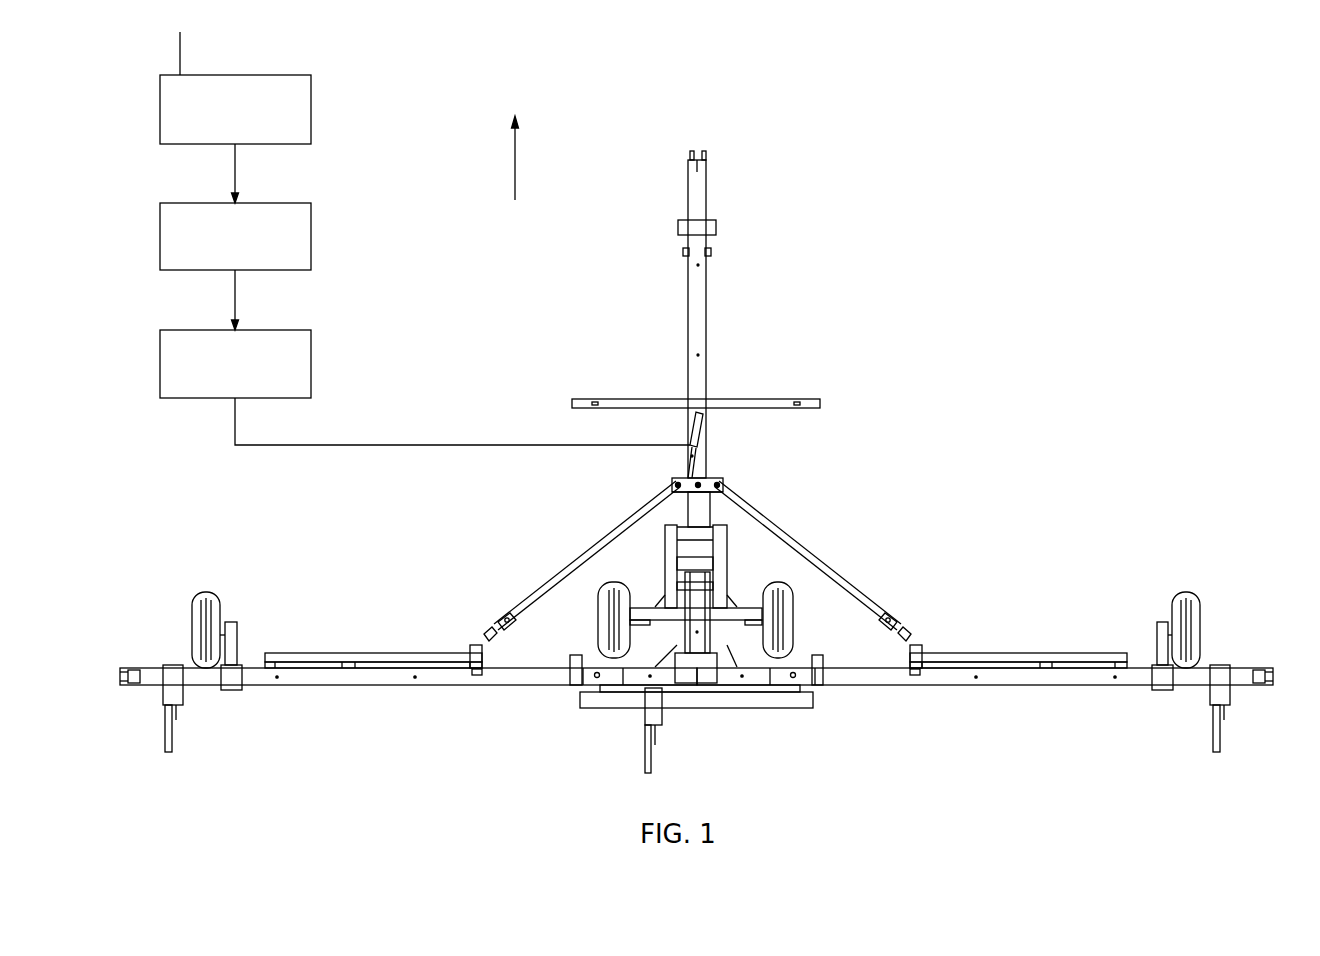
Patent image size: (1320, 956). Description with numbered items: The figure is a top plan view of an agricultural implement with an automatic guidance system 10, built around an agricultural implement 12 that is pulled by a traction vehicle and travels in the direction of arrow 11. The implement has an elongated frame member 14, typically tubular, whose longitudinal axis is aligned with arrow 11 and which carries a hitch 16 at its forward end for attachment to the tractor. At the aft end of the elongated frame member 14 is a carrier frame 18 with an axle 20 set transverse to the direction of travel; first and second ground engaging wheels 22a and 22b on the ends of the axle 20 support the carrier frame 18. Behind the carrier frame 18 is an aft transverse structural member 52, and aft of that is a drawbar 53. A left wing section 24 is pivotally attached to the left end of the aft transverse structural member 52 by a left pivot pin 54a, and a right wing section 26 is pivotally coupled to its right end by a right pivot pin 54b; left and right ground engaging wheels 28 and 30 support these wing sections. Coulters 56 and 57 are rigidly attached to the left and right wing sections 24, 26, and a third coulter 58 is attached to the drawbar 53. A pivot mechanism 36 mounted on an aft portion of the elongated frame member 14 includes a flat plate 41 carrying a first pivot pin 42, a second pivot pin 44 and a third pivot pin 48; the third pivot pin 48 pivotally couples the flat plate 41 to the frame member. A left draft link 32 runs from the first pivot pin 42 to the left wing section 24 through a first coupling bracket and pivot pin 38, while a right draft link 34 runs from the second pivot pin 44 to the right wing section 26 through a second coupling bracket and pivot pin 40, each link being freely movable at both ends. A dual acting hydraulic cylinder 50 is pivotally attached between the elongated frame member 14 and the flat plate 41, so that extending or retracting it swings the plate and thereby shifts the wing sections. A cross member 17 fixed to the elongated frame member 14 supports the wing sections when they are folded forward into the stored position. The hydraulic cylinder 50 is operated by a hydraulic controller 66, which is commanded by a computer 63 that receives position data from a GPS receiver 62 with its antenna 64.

The agricultural implement with an automatic guidance system 10 is at (874, 289).
The arrow 11 is at (515, 160).
The agricultural implement 12 is at (830, 411).
The elongated frame member 14 is at (688, 312).
The hitch 16 is at (707, 153).
The cross member 17 is at (655, 399).
The carrier frame 18 is at (728, 553).
The axle 20 is at (660, 610).
The first ground engaging wheel 22a is at (613, 618).
The second ground engaging wheel 22b is at (778, 618).
The left wing section 24 is at (356, 677).
The right wing section 26 is at (931, 677).
The left ground engaging wheel 28 is at (207, 592).
The right ground engaging wheel 30 is at (1184, 592).
The left draft link 32 is at (588, 553).
The right draft link 34 is at (810, 553).
The pivot mechanism 36 is at (724, 473).
The first coupling bracket and pivot pin 38 is at (477, 645).
The second coupling bracket and pivot pin 40 is at (918, 643).
The flat plate 41 is at (716, 483).
The first pivot pin 42 is at (678, 483).
The second pivot pin 44 is at (722, 481).
The third pivot pin 48 is at (699, 483).
The hydraulic cylinder 50 is at (690, 435).
The aft transverse structural member 52 is at (725, 683).
The drawbar 53 is at (758, 703).
The left pivot pin 54a is at (593, 678).
The right pivot pin 54b is at (798, 678).
The coulter 56 is at (173, 723).
The coulter 57 is at (1210, 723).
The coulter 58 is at (650, 757).
The GPS receiver 62 is at (257, 73).
The computer 63 is at (312, 237).
The antenna 64 is at (178, 57).
The hydraulic controller 66 is at (312, 357).